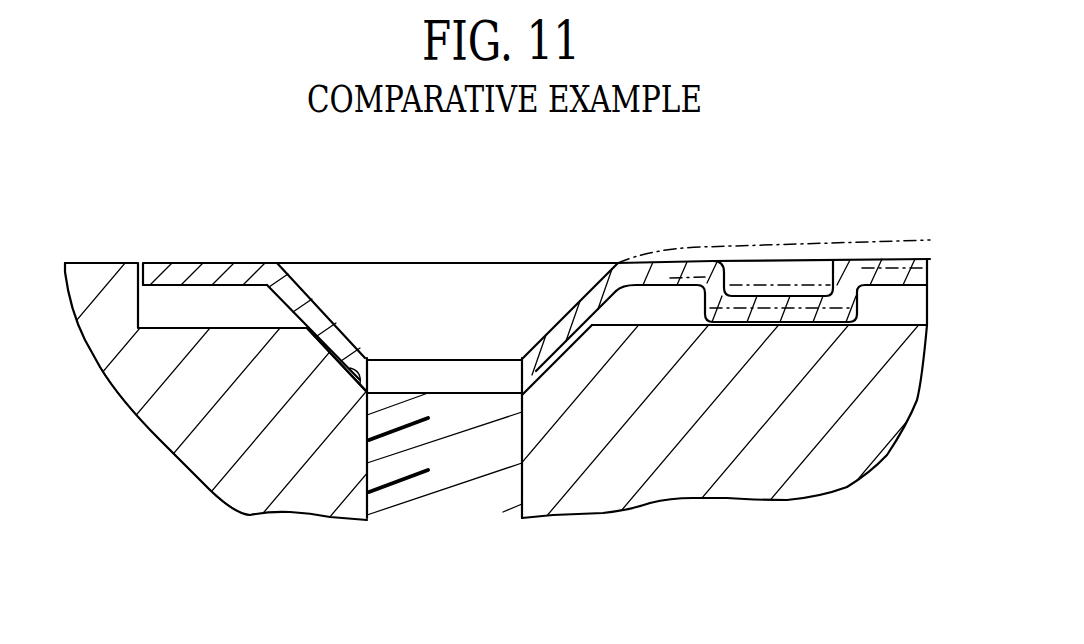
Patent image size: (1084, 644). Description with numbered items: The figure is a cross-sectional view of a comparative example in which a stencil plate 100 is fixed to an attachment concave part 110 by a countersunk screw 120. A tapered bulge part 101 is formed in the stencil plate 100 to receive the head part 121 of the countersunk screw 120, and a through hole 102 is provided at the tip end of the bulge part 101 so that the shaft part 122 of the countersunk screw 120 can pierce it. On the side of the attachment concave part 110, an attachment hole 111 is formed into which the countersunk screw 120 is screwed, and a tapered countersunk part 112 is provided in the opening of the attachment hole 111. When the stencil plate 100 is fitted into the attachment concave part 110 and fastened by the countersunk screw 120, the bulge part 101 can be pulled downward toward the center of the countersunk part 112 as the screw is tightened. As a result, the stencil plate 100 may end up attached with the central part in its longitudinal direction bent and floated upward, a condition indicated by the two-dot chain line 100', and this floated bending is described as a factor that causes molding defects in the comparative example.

The attachment concave part 110 is at (521, 392).
The stencil plate 100 is at (536, 268).
The bent stencil plate (two-dot chain line) 100' is at (774, 219).
The countersunk part 112 is at (320, 339).
The head part 121 is at (388, 283).
The countersunk screw 120 is at (478, 287).
The bulge part 101 is at (573, 310).
The through hole 102 is at (222, 500).
The shaft part 122 is at (438, 518).
The attachment hole 111 is at (513, 492).